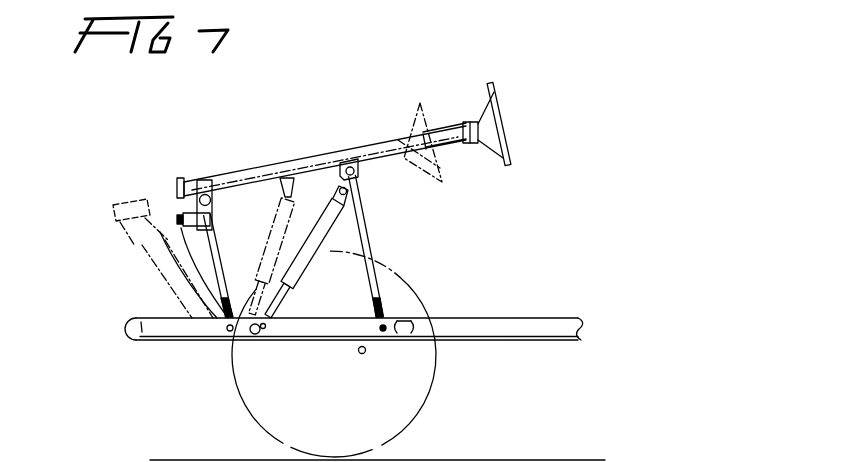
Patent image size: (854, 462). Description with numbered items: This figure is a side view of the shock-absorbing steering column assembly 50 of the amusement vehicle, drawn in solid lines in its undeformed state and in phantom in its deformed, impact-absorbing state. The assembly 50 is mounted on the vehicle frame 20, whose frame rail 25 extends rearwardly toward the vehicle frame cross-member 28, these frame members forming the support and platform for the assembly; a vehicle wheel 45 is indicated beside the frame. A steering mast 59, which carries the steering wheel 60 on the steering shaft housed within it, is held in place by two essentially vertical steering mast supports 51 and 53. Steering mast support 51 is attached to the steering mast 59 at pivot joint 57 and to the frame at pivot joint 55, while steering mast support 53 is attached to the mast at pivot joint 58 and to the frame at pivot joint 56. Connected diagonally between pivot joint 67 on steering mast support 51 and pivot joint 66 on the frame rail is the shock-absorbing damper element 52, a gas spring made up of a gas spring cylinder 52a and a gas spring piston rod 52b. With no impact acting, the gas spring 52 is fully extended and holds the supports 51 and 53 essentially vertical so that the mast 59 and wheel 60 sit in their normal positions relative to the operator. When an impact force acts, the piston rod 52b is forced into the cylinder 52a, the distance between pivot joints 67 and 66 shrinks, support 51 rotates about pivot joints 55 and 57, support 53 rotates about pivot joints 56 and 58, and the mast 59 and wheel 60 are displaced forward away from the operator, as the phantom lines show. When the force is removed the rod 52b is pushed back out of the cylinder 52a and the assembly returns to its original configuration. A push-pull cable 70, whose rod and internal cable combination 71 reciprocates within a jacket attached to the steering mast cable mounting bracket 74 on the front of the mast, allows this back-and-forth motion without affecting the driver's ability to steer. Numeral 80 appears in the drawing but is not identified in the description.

The vehicle frame 20 is at (140, 326).
The frame rail 25 is at (162, 342).
The vehicle frame cross-member 28 is at (420, 317).
The vehicle wheel 45 is at (417, 413).
The steering column assembly 50 is at (428, 60).
The steering mast support 51 is at (365, 218).
The shock-absorbing damper element 52 is at (343, 221).
The gas spring cylinder 52a is at (302, 262).
The gas spring piston rod 52b is at (280, 293).
The steering mast support 53 is at (220, 230).
The pivot joint 55 is at (387, 333).
The pivot joint 56 is at (230, 332).
The pivot joint 57 is at (357, 150).
The pivot joint 58 is at (190, 222).
The steering mast 59 is at (448, 132).
The steering wheel 60 is at (497, 110).
The pivot joint 66 is at (263, 329).
The pivot joint 67 is at (342, 186).
The push-pull cable 70 is at (180, 215).
The rod and internal cable combination 71 is at (182, 190).
The steering mast cable mounting bracket 74 is at (190, 222).
The pivot point 80 is at (364, 354).